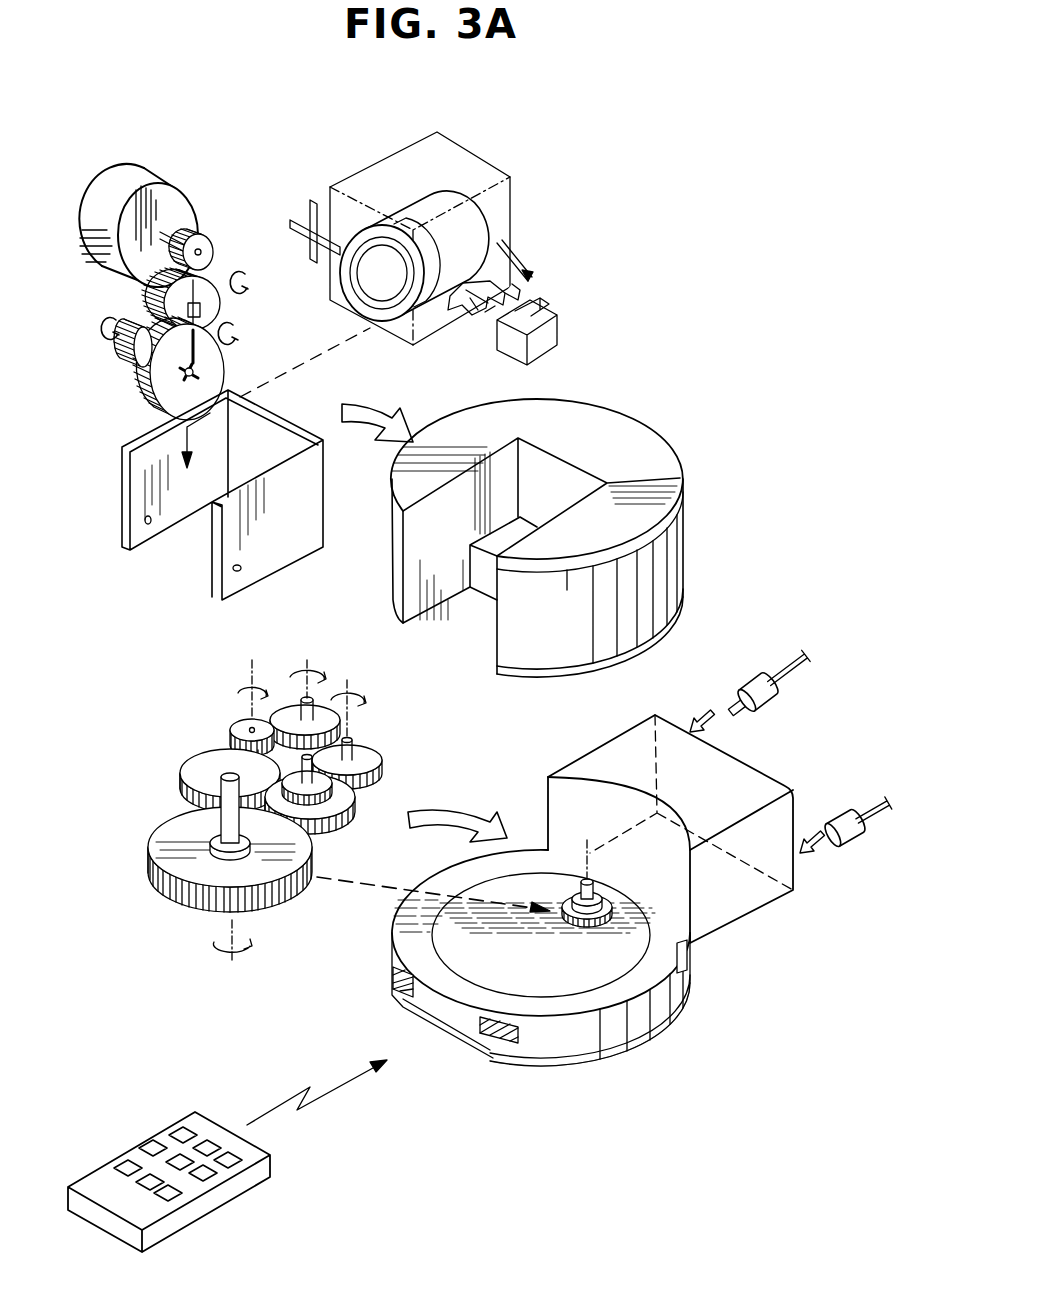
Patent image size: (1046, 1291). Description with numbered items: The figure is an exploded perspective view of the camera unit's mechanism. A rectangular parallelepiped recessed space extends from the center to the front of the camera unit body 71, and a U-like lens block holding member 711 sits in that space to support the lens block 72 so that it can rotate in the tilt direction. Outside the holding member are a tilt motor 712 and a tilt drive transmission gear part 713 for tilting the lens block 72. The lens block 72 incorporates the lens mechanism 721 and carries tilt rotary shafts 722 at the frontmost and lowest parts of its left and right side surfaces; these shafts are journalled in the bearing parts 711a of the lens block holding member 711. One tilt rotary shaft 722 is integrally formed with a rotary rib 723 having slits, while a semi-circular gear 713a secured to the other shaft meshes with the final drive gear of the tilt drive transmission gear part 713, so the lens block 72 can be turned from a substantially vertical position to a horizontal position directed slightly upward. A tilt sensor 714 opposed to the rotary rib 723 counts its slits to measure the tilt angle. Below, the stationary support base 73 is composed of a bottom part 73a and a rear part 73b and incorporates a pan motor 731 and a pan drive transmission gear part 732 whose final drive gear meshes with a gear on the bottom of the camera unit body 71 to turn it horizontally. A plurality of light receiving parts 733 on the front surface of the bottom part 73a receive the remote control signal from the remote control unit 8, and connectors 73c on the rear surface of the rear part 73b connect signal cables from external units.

The remote control unit 8 is at (213, 1200).
The camera unit body 71 is at (613, 452).
The lens block holding member 711 is at (186, 512).
The bearing parts 711a is at (233, 569).
The tilt motor 712 is at (147, 174).
The tilt drive transmission gear part 713 is at (102, 268).
The semi-circular gear 713a is at (312, 200).
The tilt sensor 714 is at (547, 333).
The lens block 72 is at (399, 220).
The lens mechanism 721 is at (362, 268).
The tilt rotary shafts 722 is at (307, 219).
The rotary rib 723 is at (514, 297).
The stationary support base 73 is at (589, 984).
The bottom part 73a is at (600, 1033).
The rear part 73b is at (757, 823).
The connectors 73c is at (840, 813).
The pan motor 731 is at (220, 753).
The pan drive transmission gear part 732 is at (294, 811).
The light receiving parts 733 is at (407, 1003).